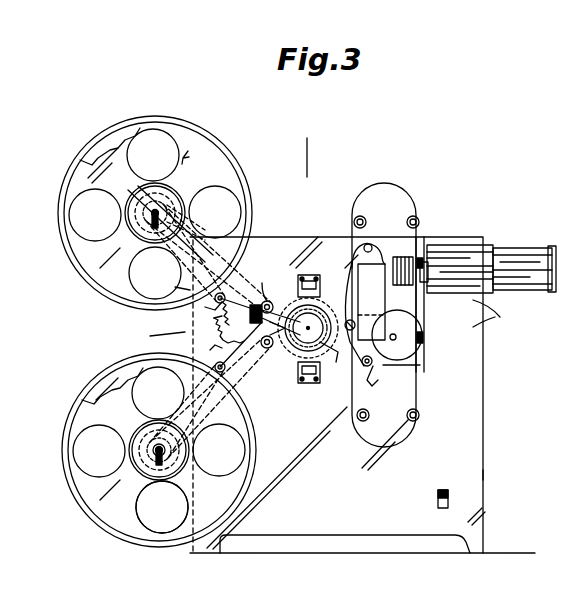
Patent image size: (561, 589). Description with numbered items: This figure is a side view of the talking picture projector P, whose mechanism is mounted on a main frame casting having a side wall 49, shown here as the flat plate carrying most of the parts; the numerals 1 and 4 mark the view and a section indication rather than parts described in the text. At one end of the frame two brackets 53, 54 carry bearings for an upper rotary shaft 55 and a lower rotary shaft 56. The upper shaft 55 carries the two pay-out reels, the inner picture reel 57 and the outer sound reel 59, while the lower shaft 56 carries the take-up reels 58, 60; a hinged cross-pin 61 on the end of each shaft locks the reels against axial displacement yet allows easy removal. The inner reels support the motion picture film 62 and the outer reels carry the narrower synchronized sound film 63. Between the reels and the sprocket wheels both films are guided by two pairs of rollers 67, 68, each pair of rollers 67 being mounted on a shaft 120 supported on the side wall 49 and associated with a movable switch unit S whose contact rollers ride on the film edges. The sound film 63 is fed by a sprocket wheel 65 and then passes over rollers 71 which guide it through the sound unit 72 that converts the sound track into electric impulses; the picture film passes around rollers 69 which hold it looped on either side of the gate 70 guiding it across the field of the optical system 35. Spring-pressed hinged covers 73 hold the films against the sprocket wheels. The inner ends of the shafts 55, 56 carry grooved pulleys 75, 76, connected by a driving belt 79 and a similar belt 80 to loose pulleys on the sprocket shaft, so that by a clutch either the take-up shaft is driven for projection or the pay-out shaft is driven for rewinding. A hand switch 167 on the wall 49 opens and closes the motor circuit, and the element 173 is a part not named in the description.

The camera housing 1 is at (483, 415).
The section line 4 is at (317, 153).
The optical system 35 is at (518, 256).
The side wall 49 is at (461, 475).
The bracket 53 is at (155, 214).
The bracket 54 is at (162, 507).
The rotary shaft 55 is at (148, 206).
The rotary shaft 56 is at (150, 449).
The picture reel 57 is at (102, 160).
The picture reel 58 is at (105, 385).
The sound reel 59 is at (216, 160).
The sound reel 60 is at (75, 418).
The hinged cross-pin 61 is at (138, 226).
The motion picture film 62 is at (386, 183).
The sound film 63 is at (380, 262).
The sprocket wheel 65 is at (330, 375).
The rollers 67 is at (209, 331).
The rollers 68 is at (247, 319).
The rollers 69 is at (354, 222).
The gate 70 is at (456, 288).
The rollers 71 is at (362, 250).
The sound unit 72 is at (358, 268).
The hinged cover 73 is at (320, 297).
The grooved pulley 75 is at (190, 215).
The grooved pulley 76 is at (145, 432).
The driving belt 79 is at (262, 283).
The belt 80 is at (185, 393).
The shaft 120 is at (163, 311).
The hand switch 167 is at (436, 496).
The tension bracket 173 is at (257, 332).
The projector P is at (493, 313).
The switch unit S is at (211, 326).